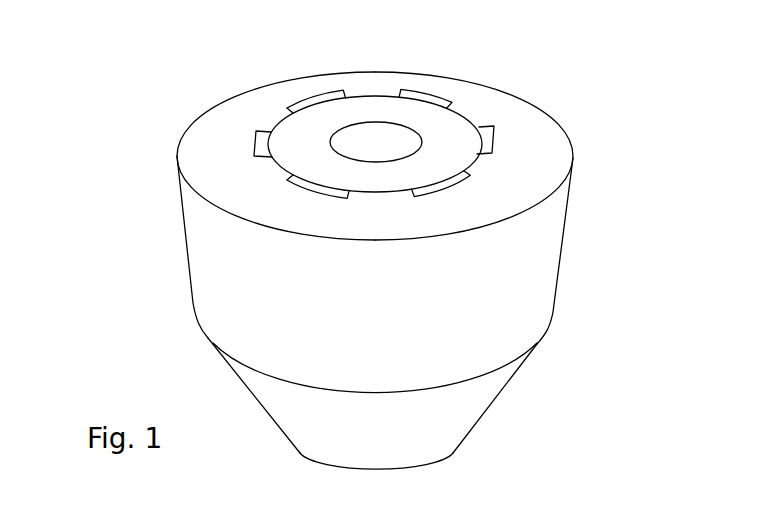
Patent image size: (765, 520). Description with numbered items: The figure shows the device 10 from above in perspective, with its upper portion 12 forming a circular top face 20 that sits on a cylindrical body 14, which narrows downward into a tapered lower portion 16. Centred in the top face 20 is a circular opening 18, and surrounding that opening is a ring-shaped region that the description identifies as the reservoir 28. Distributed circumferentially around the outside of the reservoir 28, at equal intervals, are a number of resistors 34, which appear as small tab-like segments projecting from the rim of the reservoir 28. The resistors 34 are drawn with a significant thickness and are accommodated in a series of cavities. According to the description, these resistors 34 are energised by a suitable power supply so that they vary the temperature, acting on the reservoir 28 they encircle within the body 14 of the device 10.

The assembly 10 is at (160, 252).
The upper rim 12 is at (208, 131).
The cylindrical body 14 is at (529, 262).
The conical lower portion 16 is at (468, 408).
The central bore 18 is at (378, 144).
The top face 20 is at (514, 118).
The reservoir 28 is at (357, 113).
The resistors 34 is at (262, 133).